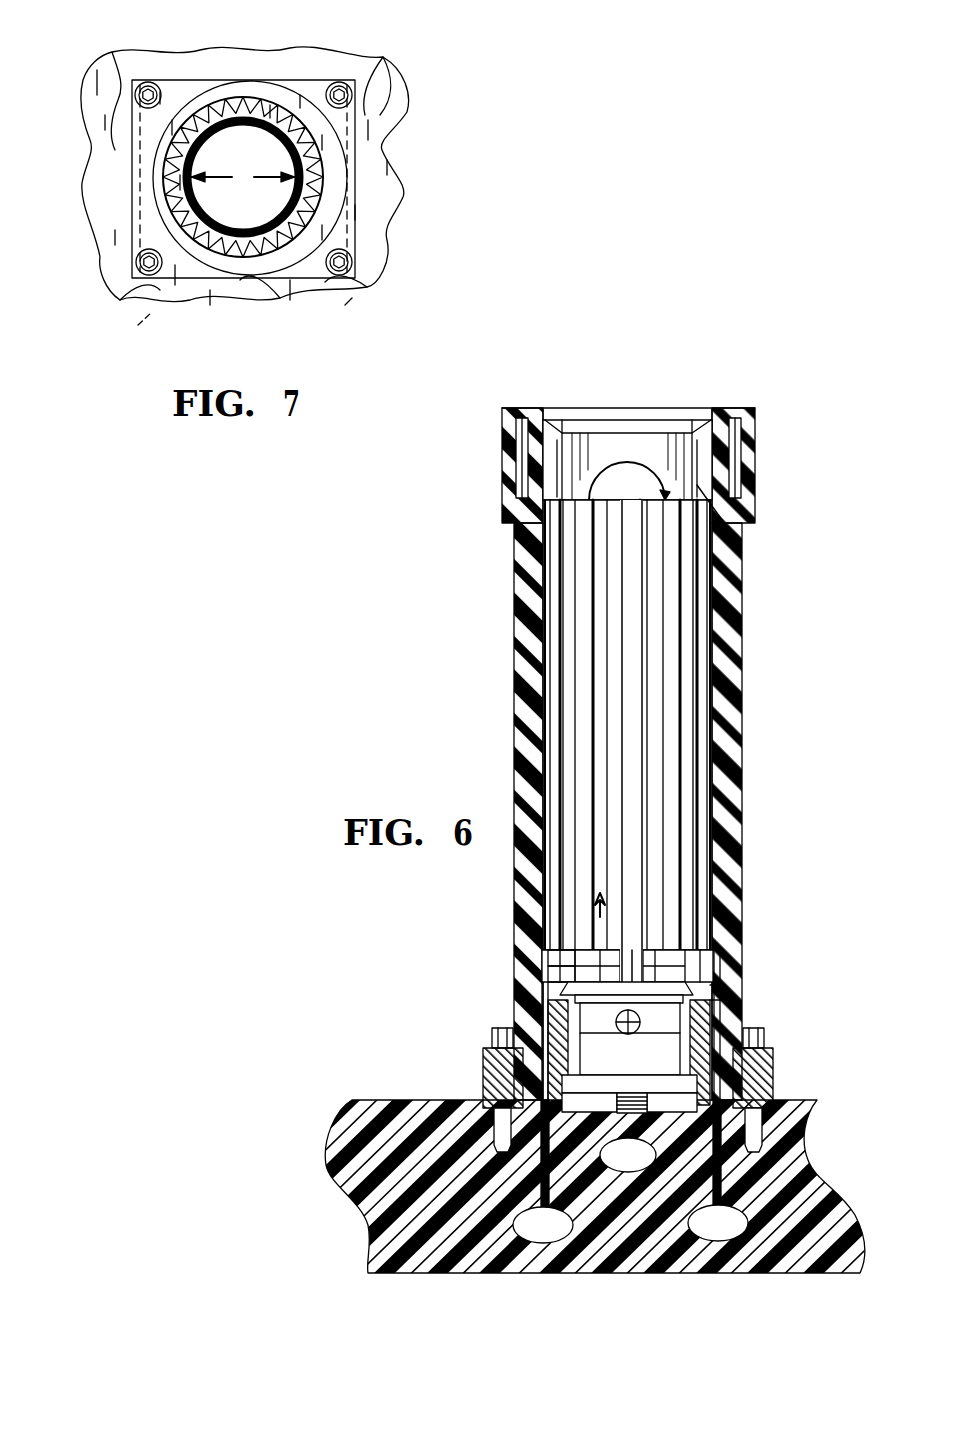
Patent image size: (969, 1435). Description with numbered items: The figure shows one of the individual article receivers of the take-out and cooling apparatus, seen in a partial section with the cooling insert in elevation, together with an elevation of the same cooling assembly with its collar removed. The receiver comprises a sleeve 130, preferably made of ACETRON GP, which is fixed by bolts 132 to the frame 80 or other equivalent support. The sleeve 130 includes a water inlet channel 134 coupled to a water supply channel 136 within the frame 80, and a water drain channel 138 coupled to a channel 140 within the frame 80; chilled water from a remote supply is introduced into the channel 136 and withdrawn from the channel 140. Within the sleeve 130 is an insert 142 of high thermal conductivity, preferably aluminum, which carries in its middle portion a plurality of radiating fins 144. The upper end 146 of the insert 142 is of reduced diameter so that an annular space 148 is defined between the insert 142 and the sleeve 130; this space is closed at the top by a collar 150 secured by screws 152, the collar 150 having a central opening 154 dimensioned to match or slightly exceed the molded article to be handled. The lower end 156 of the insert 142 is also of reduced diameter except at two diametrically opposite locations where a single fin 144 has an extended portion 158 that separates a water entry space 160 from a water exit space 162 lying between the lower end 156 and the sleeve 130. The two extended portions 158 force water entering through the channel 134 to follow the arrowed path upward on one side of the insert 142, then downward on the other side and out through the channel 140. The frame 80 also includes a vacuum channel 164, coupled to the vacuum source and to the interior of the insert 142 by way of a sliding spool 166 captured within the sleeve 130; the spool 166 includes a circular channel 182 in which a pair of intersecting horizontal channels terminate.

In FIG. 7, the frame 80 is at (385, 90).
In FIG. 6, the frame 80 is at (808, 1108).
In FIG. 7, the sleeve 130 is at (243, 179).
In FIG. 6, the sleeve 130 is at (727, 823).
In FIG. 7, the bolts 132 is at (142, 88).
In FIG. 6, the bolts 132 is at (768, 1032).
In FIG. 6, the water inlet channel 134 is at (548, 1002).
In FIG. 7, the water supply channel 136 is at (120, 342).
In FIG. 6, the water supply channel 136 is at (543, 1228).
In FIG. 6, the water drain channel 138 is at (735, 990).
In FIG. 7, the channel 140 is at (350, 305).
In FIG. 6, the channel 140 is at (718, 1226).
In FIG. 7, the insert 142 is at (300, 282).
In FIG. 6, the insert 142 is at (695, 743).
In FIG. 7, the radiating fins 144 is at (242, 98).
In FIG. 6, the radiating fins 144 is at (683, 632).
In FIG. 6, the upper end 146 is at (622, 450).
In FIG. 7, the annular space 148 is at (222, 262).
In FIG. 6, the annular space 148 is at (706, 490).
In FIG. 6, the collar 150 is at (556, 428).
In FIG. 6, the screws 152 is at (738, 412).
In FIG. 6, the central opening 154 is at (596, 415).
In FIG. 6, the lower end 156 is at (560, 980).
In FIG. 7, the extended portion 158 is at (215, 108).
In FIG. 6, the extended portion 158 is at (627, 960).
In FIG. 6, the water entry space 160 is at (580, 957).
In FIG. 6, the water exit space 162 is at (672, 965).
In FIG. 6, the vacuum channel 164 is at (632, 1152).
In FIG. 6, the sliding spool 166 is at (705, 1012).
In FIG. 6, the circular channel 182 is at (598, 1025).